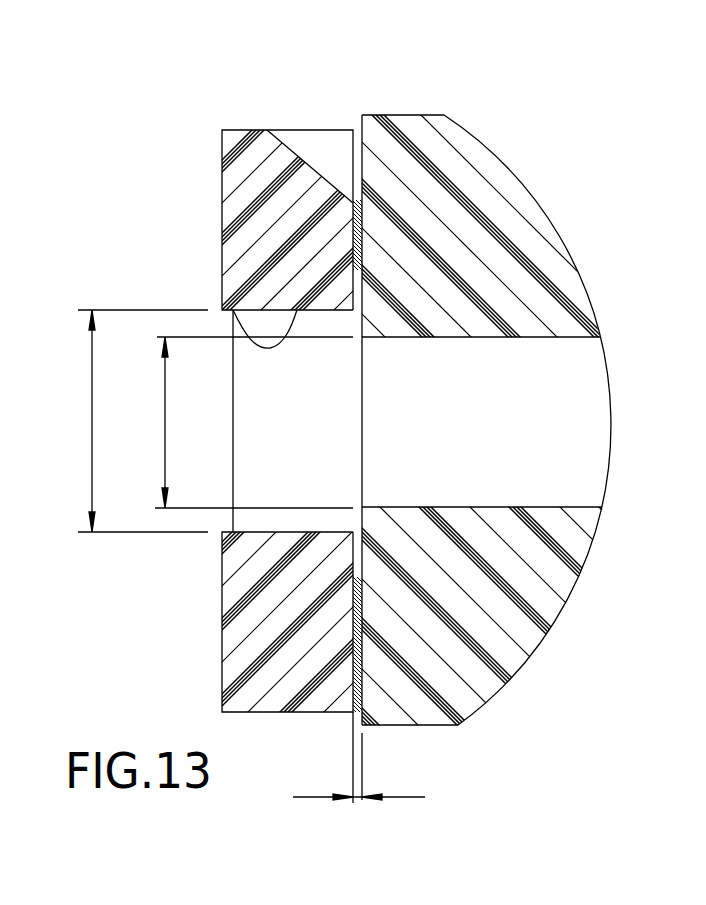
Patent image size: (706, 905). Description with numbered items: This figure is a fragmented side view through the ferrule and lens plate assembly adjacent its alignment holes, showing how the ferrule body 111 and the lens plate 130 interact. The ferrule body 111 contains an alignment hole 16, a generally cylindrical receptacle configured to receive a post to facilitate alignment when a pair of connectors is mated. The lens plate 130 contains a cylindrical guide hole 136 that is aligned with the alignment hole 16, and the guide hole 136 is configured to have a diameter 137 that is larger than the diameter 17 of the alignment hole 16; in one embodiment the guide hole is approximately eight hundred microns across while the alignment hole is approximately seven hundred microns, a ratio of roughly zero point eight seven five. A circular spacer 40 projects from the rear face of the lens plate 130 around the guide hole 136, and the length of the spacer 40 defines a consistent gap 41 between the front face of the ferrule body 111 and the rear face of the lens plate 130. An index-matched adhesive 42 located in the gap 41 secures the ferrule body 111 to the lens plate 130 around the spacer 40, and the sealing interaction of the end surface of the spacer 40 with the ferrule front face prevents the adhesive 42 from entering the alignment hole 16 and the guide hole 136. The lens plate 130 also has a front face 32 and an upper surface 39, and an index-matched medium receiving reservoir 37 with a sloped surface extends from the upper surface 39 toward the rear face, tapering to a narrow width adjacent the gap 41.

The alignment hole 16 is at (520, 337).
The diameter of alignment hole 17 is at (163, 415).
The front face 32 is at (222, 637).
The index-matched medium receiving reservoir 37 is at (330, 152).
The upper surface 39 is at (255, 130).
The spacer 40 is at (356, 300).
The gap 41 is at (362, 800).
The index-matched adhesive 42 is at (347, 222).
The ferrule body 111 is at (418, 134).
The lens plate 130 is at (222, 158).
The guide hole 136 is at (222, 310).
The diameter of guide hole 137 is at (92, 437).